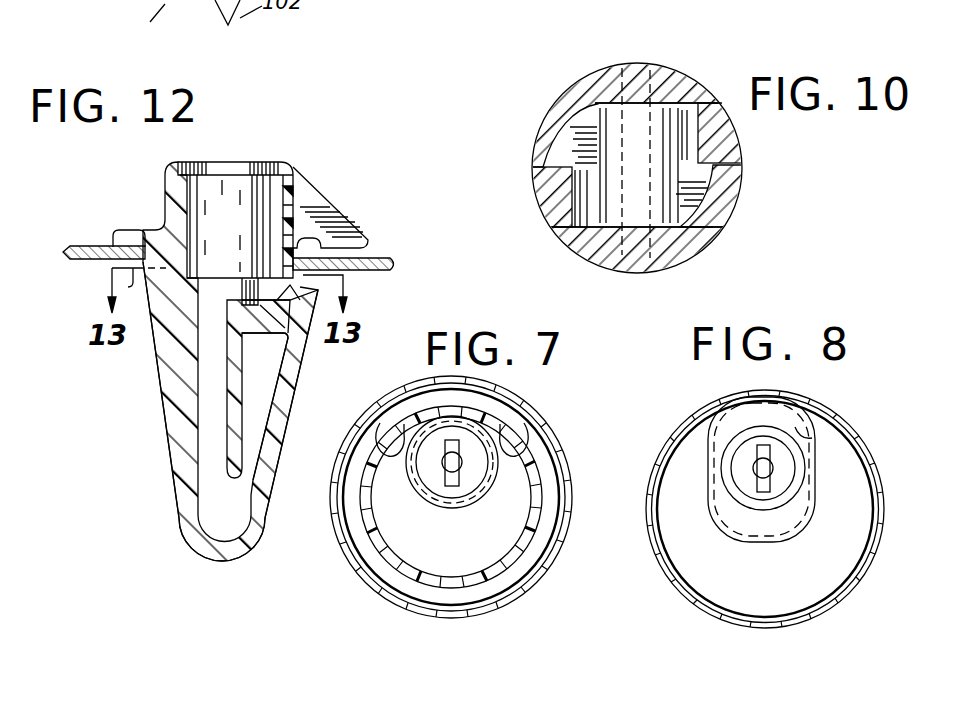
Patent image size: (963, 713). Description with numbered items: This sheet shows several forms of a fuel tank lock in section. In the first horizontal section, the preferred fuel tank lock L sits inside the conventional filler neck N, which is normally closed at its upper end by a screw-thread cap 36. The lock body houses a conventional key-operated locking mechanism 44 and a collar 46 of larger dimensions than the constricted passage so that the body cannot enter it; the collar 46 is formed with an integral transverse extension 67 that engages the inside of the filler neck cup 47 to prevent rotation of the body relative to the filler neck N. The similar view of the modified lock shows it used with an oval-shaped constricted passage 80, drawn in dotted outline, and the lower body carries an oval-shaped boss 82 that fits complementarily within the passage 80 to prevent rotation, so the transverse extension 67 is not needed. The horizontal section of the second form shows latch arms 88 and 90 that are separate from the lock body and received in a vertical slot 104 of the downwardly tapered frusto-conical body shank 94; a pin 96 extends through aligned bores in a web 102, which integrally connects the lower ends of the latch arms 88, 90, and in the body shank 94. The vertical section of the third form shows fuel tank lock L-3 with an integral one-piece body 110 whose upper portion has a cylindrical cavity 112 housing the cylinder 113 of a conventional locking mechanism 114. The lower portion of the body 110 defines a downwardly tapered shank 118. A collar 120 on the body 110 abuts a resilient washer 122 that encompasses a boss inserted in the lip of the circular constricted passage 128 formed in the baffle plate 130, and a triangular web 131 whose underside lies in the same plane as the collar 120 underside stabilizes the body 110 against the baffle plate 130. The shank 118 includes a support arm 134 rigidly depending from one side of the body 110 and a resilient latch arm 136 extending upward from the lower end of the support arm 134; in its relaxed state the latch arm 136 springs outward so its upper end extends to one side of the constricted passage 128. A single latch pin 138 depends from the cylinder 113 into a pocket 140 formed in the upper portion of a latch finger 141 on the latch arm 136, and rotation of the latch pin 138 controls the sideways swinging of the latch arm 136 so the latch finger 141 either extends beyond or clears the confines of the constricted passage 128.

In FIG. 12, the body 110 is at (158, 187).
In FIG. 12, the cylindrical cavity 112 is at (200, 162).
In FIG. 12, the cylinder 113 is at (223, 187).
In FIG. 12, the locking mechanism 114 is at (268, 150).
In FIG. 12, the shank 118 is at (154, 418).
In FIG. 12, the collar 120 is at (150, 230).
In FIG. 12, the resilient washer 122 is at (110, 246).
In FIG. 12, the constricted passage 128 is at (120, 286).
In FIG. 12, the baffle plate 130 is at (380, 256).
In FIG. 12, the triangular web 131 is at (328, 210).
In FIG. 12, the support arm 134 is at (176, 440).
In FIG. 12, the latch arm 136 is at (294, 418).
In FIG. 12, the latch pin 138 is at (265, 406).
In FIG. 12, the pocket 140 is at (298, 340).
In FIG. 12, the latch finger 141 is at (322, 292).
In FIG. 12, the fuel tank lock L-3 is at (165, 178).
In FIG. 10, the latch arm 88 is at (547, 210).
In FIG. 10, the latch arm 90 is at (735, 153).
In FIG. 10, the body shank 94 is at (667, 103).
In FIG. 10, the pin 96 is at (652, 68).
In FIG. 10, the web 102 is at (612, 220).
In FIG. 10, the vertical slot 104 is at (683, 220).
In FIG. 7, the screw-thread cap 36 is at (520, 557).
In FIG. 7, the key-operated locking mechanism 44 is at (470, 510).
In FIG. 7, the collar 46 is at (440, 510).
In FIG. 7, the filler neck cup 47 is at (552, 443).
In FIG. 8, the filler neck cup 47 is at (868, 553).
In FIG. 7, the transverse extension 67 is at (523, 419).
In FIG. 7, the fuel tank lock L is at (472, 477).
In FIG. 8, the fuel tank lock L is at (783, 487).
In FIG. 7, the filler neck N is at (565, 520).
In FIG. 8, the filler neck N is at (850, 598).
In FIG. 8, the oval-shaped constricted passage 80 is at (812, 432).
In FIG. 8, the oval-shaped boss 82 is at (783, 420).